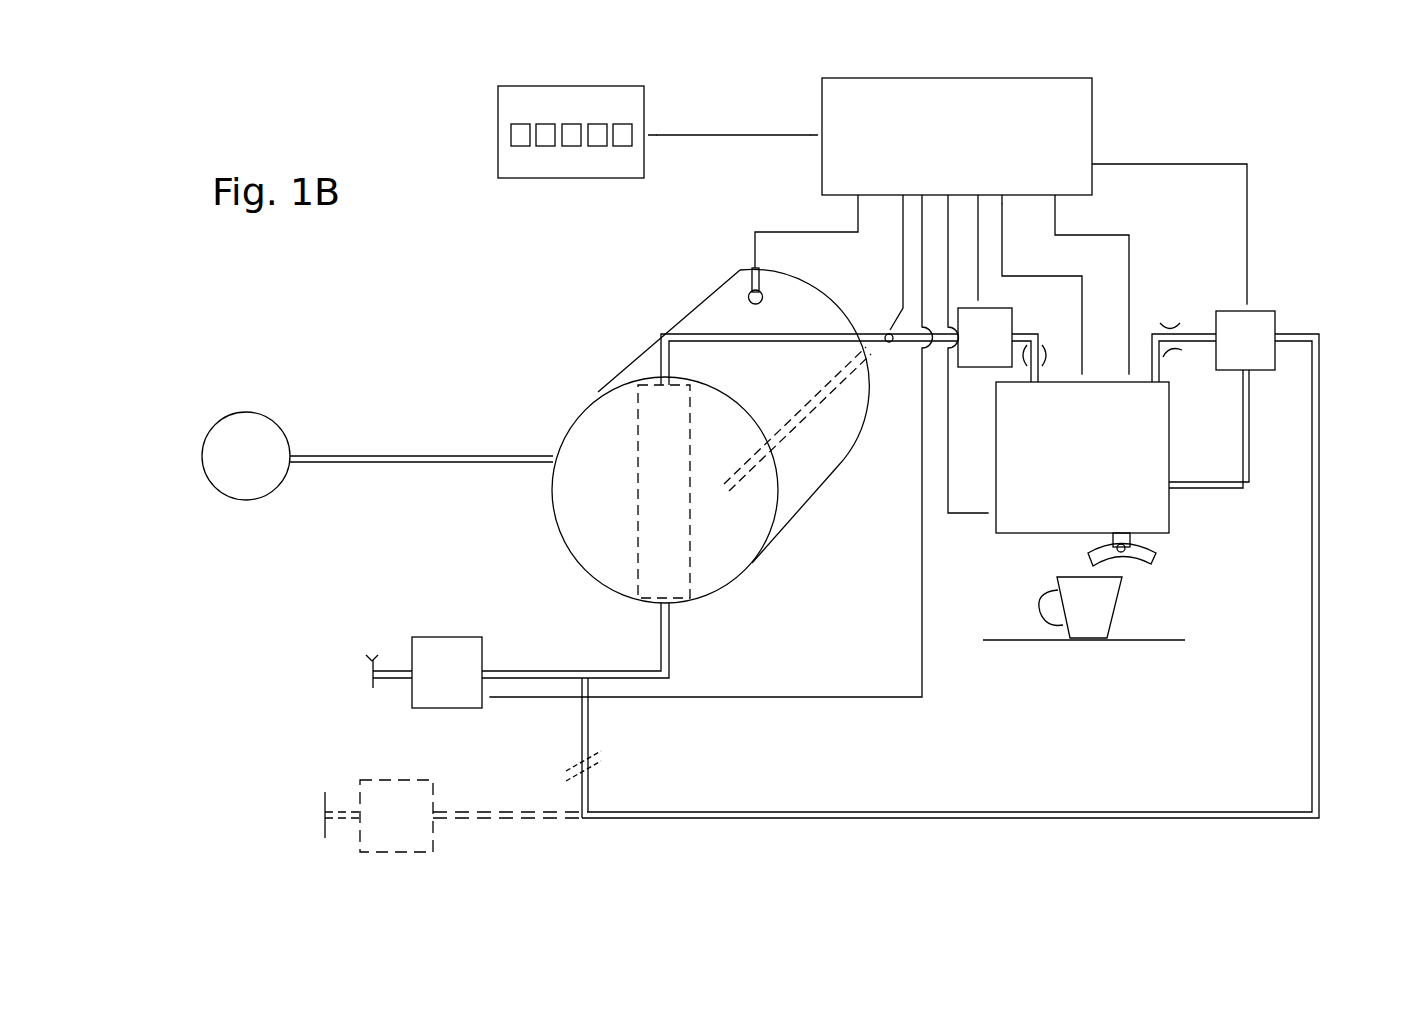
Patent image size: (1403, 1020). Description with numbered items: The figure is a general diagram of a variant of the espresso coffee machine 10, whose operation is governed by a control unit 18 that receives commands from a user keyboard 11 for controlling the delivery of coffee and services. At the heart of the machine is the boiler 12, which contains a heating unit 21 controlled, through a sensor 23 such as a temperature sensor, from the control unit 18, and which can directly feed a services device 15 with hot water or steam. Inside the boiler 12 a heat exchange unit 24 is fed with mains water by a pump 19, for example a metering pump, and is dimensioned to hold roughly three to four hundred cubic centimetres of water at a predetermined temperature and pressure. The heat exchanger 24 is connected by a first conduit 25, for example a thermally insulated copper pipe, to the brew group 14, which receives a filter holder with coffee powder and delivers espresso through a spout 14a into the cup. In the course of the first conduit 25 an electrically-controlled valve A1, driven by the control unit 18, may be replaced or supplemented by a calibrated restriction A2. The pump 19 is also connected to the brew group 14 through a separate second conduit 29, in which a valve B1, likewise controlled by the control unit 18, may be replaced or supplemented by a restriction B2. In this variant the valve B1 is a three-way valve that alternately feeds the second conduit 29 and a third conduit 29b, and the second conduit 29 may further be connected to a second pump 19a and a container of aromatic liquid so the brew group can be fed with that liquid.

The espresso coffee machine 10 is at (1272, 158).
The keyboard 11 is at (620, 97).
The boiler 12 is at (564, 315).
The brew group 14 is at (1216, 506).
The spout 14a is at (1136, 568).
The services device 15 is at (263, 470).
The control unit 18 is at (1066, 52).
The pump 19 is at (450, 690).
The second pump 19a is at (388, 797).
The heating unit 21 is at (812, 408).
The sensor 23 is at (753, 263).
The heat exchange unit 24 is at (678, 552).
The first conduit 25 is at (1018, 330).
The second conduit 29 is at (1162, 362).
The third conduit 29b is at (1240, 486).
The valve A1 is at (986, 342).
The restriction A2 is at (1053, 341).
The valve B1 is at (1245, 340).
The restriction B2 is at (1170, 325).